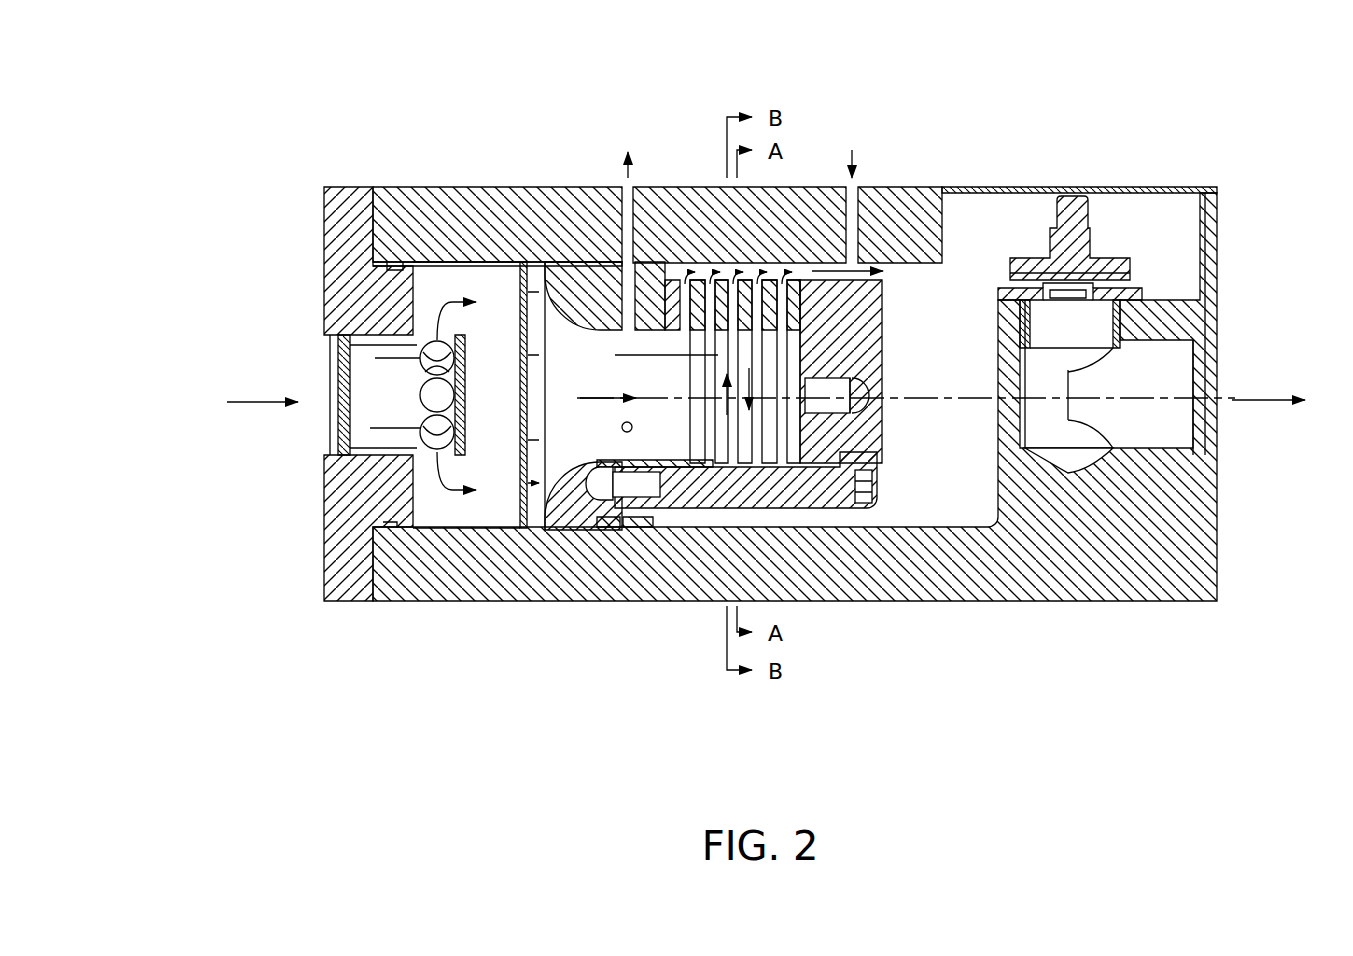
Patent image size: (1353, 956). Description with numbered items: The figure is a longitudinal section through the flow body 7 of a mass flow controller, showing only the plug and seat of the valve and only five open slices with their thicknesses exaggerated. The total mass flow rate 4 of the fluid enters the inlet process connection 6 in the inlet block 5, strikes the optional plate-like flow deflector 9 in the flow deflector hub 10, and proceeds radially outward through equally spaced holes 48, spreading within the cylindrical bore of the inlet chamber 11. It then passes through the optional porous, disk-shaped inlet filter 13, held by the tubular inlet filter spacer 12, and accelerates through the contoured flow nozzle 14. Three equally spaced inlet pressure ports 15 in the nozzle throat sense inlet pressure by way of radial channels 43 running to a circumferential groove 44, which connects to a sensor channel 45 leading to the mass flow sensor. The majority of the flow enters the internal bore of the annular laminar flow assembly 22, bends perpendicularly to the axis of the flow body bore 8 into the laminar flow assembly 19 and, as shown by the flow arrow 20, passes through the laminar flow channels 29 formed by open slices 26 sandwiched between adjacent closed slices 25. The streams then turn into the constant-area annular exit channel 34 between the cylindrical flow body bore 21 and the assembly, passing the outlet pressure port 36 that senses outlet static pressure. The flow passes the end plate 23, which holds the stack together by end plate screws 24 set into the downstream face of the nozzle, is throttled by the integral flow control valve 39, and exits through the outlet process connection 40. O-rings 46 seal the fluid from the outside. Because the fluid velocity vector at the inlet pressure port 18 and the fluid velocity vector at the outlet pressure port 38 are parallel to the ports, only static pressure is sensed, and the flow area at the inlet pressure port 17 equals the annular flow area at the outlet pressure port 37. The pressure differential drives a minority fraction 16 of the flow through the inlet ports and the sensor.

The total mass flow rate 4 is at (268, 402).
The inlet block 5 is at (398, 214).
The inlet process connection 6 is at (354, 486).
The flow body 7 is at (1052, 603).
The flow body bore 8 is at (1213, 520).
The flow deflector 9 is at (416, 524).
The flow deflector hub 10 is at (326, 232).
The inlet chamber 11 is at (562, 342).
The inlet filter spacer 12 is at (606, 384).
The inlet filter 13 is at (461, 458).
The flow nozzle 14 is at (528, 500).
The inlet pressure ports 15 is at (614, 352).
The minority fraction 16 is at (626, 146).
The inlet pressure port flow area 17 is at (650, 298).
The inlet pressure port fluid velocity vector 18 is at (546, 500).
The laminar flow assembly 19 is at (826, 518).
The flow arrow 20 is at (572, 470).
The cylindrical flow body bore 21 is at (702, 466).
The annular laminar flow assembly 22 is at (763, 518).
The end plate 23 is at (883, 430).
The end plate screws 24 is at (880, 522).
The closed slices 25 is at (662, 490).
The open slices 26 is at (626, 432).
The laminar flow channels 29 is at (697, 270).
The annular exit channel 34 is at (740, 520).
The outlet pressure port 36 is at (905, 262).
The outlet pressure port annular flow area 37 is at (820, 266).
The outlet pressure port fluid velocity vector 38 is at (940, 262).
The flow control valve 39 is at (1106, 174).
The outlet process connection 40 is at (1168, 400).
The radial channels 43 is at (697, 284).
The circumferential groove 44 is at (721, 284).
The sensor channel 45 is at (745, 284).
The O-rings 46 is at (522, 296).
The holes 48 is at (437, 392).